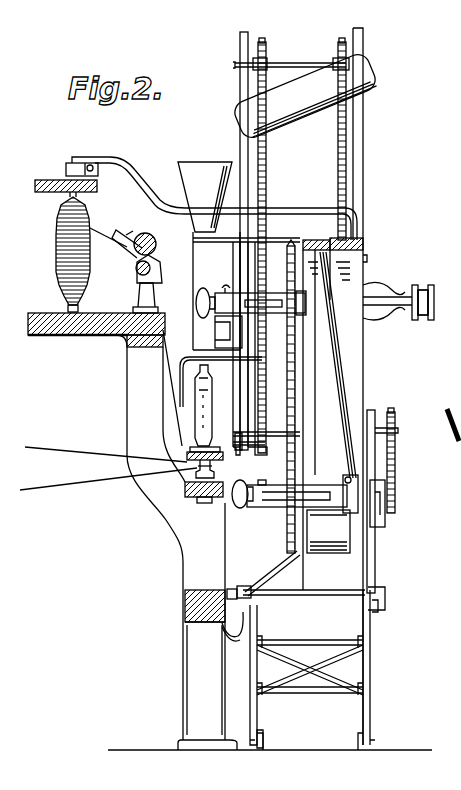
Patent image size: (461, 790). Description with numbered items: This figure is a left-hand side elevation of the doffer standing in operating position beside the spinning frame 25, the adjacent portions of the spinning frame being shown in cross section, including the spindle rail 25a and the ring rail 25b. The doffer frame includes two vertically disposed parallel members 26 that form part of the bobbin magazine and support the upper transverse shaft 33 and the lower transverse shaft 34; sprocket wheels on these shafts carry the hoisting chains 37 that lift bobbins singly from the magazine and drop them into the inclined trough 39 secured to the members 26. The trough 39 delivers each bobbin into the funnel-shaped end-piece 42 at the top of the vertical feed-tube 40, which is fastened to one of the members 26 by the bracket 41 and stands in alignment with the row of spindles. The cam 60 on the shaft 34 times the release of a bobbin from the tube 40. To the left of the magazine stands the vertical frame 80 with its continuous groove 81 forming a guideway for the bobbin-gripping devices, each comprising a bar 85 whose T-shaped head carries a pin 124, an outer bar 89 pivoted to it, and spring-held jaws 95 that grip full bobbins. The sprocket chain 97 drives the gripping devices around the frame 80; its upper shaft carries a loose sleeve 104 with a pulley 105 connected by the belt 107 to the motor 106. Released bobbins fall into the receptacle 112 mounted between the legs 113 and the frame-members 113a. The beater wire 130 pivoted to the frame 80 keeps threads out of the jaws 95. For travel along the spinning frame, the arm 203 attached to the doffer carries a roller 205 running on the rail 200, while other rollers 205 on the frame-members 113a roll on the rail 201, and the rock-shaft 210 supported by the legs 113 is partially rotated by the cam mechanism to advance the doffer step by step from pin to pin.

The spinning frame 25 is at (52, 196).
The spindle rail 25a is at (185, 492).
The ring rail 25b is at (187, 456).
The vertically disposed parallel members 26 is at (245, 88).
The transverse shaft 33 is at (295, 63).
The transverse shaft 34 is at (298, 432).
The hoisting chains 37 is at (338, 160).
The inclined trough 39 is at (305, 96).
The feed-tube 40 is at (200, 257).
The bracket 41 is at (225, 242).
The funnel-shaped end-piece 42 is at (197, 165).
The cam 60 is at (249, 454).
The frame 80 is at (363, 382).
The continuous groove 81 is at (322, 240).
The bar 85 is at (215, 304).
The outer bar 89 is at (383, 464).
The jaws 95 is at (201, 292).
The sprocket chain 97 is at (298, 353).
The loose sleeve 104 is at (400, 310).
The pulley 105 is at (430, 291).
The motor 106 is at (388, 288).
The belt 107 is at (421, 318).
The receptacle 112 is at (314, 683).
The legs 113 is at (370, 630).
The frame-members 113a is at (258, 721).
The pin 124 is at (346, 479).
The wire 130 is at (222, 360).
The rail 200 is at (126, 256).
The rail 201 is at (240, 640).
The arm 203 is at (151, 186).
The roller 205 is at (66, 169).
The rock-shaft 210 is at (298, 596).